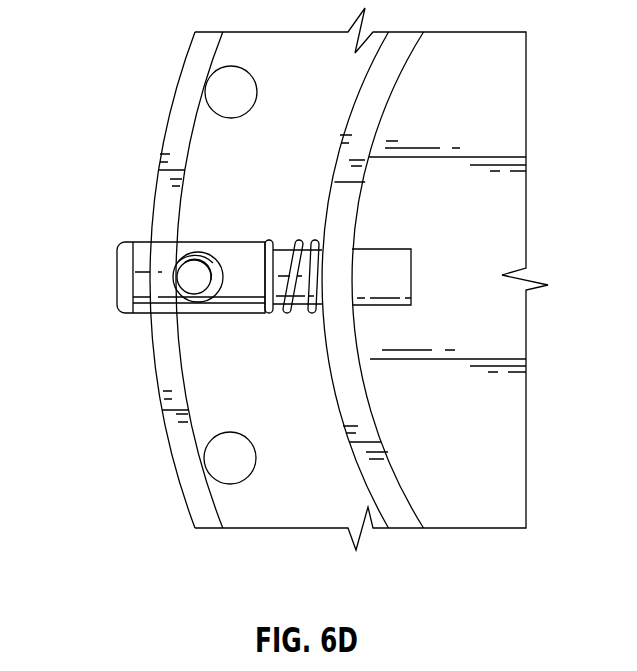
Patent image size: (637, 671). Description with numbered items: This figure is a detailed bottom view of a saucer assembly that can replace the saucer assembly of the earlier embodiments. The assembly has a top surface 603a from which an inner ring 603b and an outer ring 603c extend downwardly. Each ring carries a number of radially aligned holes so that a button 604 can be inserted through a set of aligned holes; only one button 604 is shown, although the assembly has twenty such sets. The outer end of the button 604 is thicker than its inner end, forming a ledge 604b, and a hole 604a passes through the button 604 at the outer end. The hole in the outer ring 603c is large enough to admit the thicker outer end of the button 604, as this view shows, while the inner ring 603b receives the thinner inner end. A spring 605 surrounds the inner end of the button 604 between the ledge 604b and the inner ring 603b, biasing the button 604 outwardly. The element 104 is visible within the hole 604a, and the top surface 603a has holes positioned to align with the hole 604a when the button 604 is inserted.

The pin 104 is at (194, 263).
The top surface 603a is at (495, 92).
The inner ring 603b is at (362, 199).
The outer ring 603c is at (150, 182).
The button 604 is at (108, 276).
The hole 604a is at (194, 318).
The ledge 604b is at (268, 238).
The spring 605 is at (287, 318).